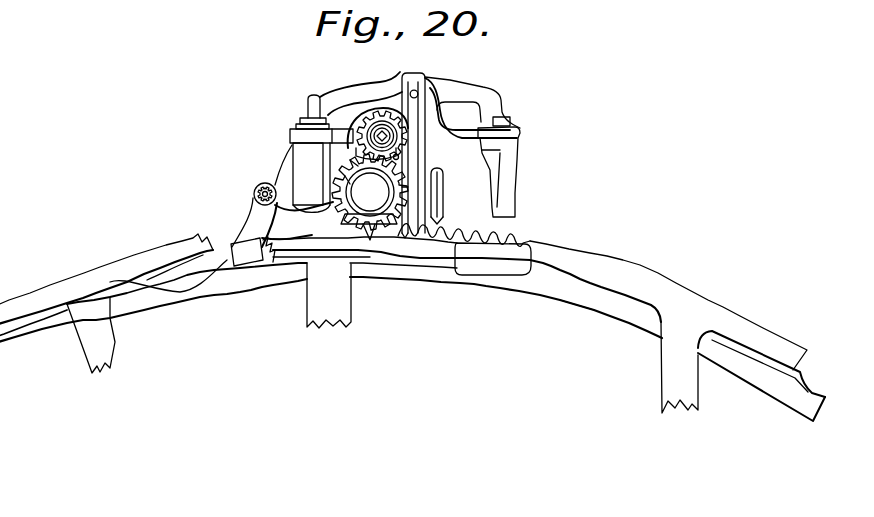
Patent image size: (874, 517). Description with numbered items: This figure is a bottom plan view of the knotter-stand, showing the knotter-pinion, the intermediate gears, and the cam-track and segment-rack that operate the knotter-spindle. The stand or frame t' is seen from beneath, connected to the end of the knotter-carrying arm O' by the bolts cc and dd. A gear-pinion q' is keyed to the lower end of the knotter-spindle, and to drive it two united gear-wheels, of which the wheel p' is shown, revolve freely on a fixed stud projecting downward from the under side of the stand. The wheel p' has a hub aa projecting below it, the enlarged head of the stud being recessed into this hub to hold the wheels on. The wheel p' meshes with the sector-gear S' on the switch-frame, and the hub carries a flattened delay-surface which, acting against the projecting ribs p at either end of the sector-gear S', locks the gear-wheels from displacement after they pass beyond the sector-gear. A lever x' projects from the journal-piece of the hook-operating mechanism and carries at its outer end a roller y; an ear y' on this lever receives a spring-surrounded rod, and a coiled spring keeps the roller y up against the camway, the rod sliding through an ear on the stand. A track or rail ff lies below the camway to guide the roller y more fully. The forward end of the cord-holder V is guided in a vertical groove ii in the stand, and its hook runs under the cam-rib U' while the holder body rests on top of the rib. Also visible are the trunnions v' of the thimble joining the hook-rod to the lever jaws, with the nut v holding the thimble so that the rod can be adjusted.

The projecting ribs p is at (412, 327).
The track or rail ff is at (466, 268).
The sector-gear S' is at (517, 240).
The cam-rib U' is at (577, 319).
The hub aa is at (392, 232).
The roller y is at (237, 241).
The lever x' is at (282, 196).
The ear y' is at (250, 199).
The gear-wheel p' is at (301, 170).
The bolts dd is at (307, 112).
The vertical groove ii is at (412, 82).
The cord-holder V is at (424, 88).
The stand or frame t' is at (445, 92).
The bolts cc is at (512, 123).
The arm O' is at (545, 180).
The trunnions v' is at (369, 108).
The fixed stud bb is at (370, 197).
The nut v is at (349, 155).
The pawl c' is at (426, 186).
The gear-pinion q' is at (355, 187).